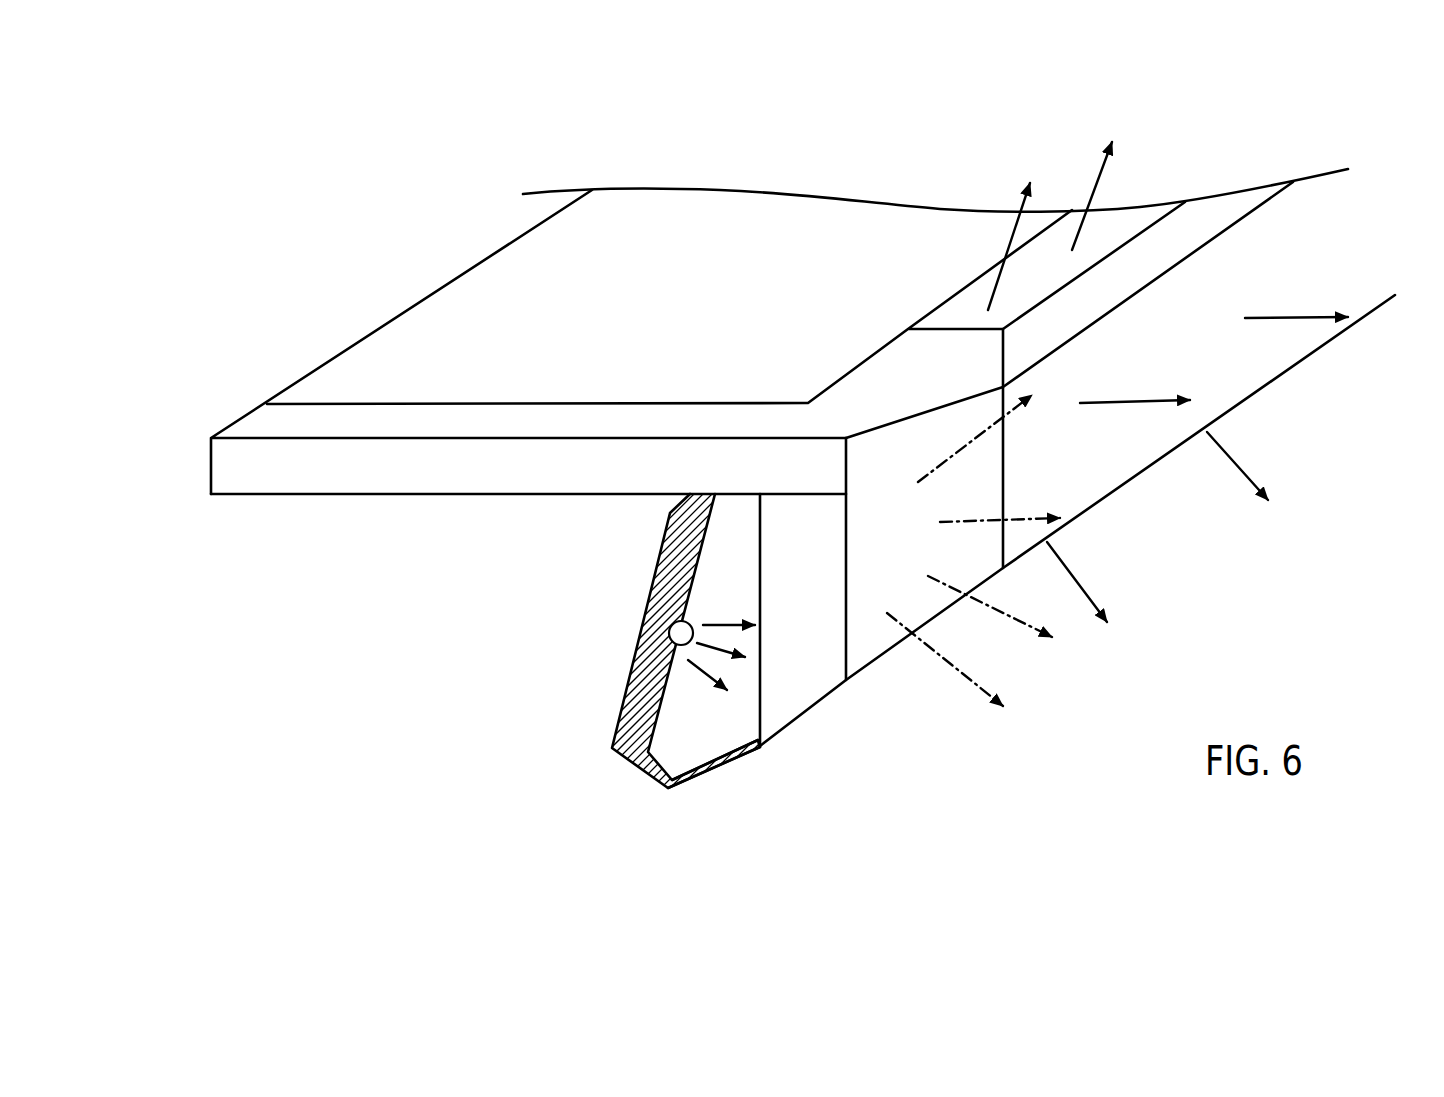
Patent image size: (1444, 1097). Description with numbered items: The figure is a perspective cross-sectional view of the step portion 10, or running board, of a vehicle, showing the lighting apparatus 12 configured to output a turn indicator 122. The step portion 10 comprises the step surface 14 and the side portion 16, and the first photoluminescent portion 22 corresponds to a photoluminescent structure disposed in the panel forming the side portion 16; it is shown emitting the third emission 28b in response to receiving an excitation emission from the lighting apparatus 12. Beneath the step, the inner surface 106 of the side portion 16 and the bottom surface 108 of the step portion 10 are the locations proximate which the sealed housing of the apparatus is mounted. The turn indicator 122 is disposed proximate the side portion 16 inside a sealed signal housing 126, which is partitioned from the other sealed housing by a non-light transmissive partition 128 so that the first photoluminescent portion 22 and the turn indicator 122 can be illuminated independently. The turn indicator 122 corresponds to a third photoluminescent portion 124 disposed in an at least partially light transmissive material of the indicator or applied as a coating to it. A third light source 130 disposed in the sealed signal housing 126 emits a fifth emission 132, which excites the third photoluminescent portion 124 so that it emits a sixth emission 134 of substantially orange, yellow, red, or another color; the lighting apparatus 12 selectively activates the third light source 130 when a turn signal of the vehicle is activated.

The step portion 10 is at (280, 317).
The lighting apparatus 12 is at (918, 102).
The step surface 14 is at (448, 322).
The side portion 16 is at (1077, 520).
The first photoluminescent portion 22 is at (1263, 359).
The third emission 28b is at (1010, 245).
The inner surface 106 is at (757, 703).
The bottom surface 108 is at (470, 496).
The turn indicator 122 is at (850, 593).
The third photoluminescent portion 124 is at (803, 592).
The sealed signal housing 126 is at (633, 707).
The non-light transmissive partition 128 is at (1003, 487).
The third light source 130 is at (683, 632).
The fifth emission 132 is at (712, 627).
The sixth emission 134 is at (953, 523).